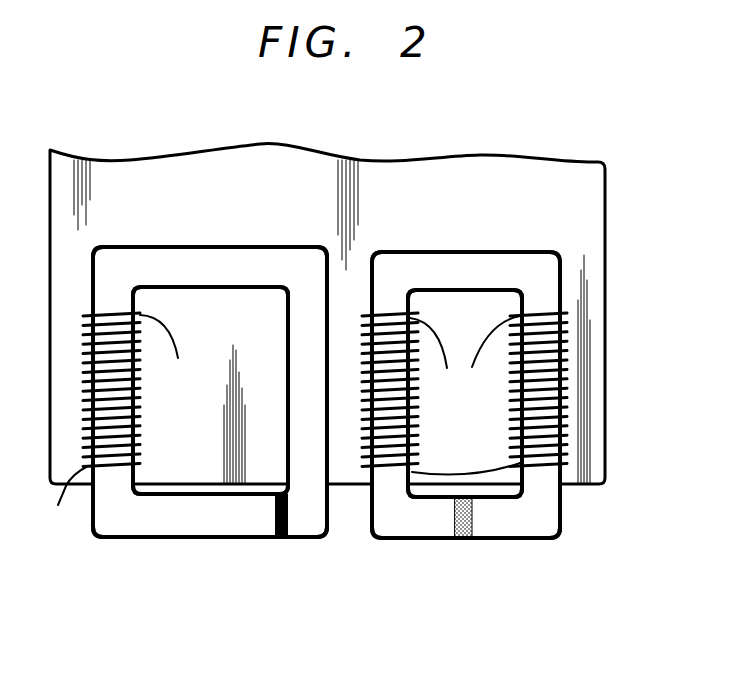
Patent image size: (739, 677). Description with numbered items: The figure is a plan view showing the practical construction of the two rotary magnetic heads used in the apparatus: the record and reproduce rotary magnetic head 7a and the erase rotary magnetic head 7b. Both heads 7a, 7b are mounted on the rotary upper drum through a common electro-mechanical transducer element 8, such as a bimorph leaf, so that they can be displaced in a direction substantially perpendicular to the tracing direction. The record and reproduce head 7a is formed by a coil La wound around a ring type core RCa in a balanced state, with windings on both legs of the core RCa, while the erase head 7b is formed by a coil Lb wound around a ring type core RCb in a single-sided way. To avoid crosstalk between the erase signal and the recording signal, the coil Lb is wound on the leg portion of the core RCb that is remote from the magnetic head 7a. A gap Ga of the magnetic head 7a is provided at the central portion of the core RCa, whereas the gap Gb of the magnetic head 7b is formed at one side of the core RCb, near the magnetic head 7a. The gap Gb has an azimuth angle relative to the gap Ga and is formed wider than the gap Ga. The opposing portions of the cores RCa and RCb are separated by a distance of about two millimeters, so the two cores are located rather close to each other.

The electro-mechanical transducer element 8 is at (514, 170).
The record and reproduce rotary magnetic head 7a is at (525, 532).
The erase rotary magnetic head 7b is at (185, 528).
The ring type core RCa is at (445, 261).
The ring type core RCb is at (237, 256).
The coil La is at (418, 428).
The coil Lb is at (141, 432).
The gap Ga is at (461, 540).
The gap Gb is at (281, 538).